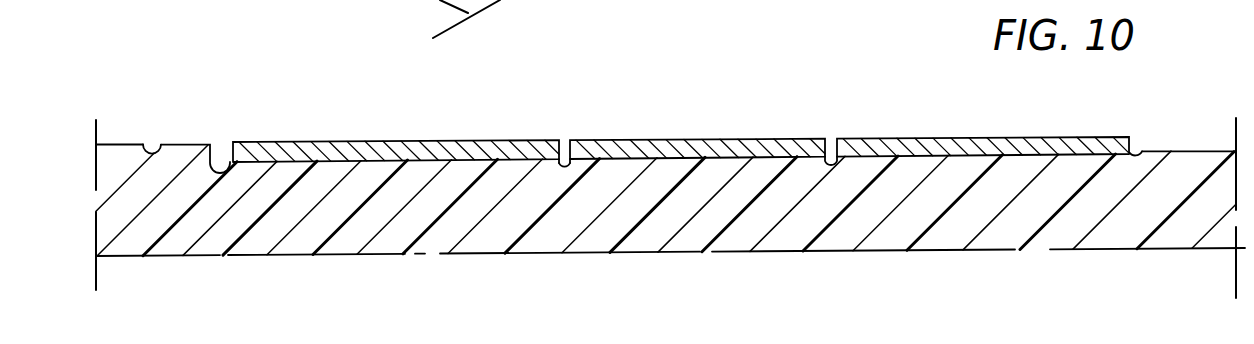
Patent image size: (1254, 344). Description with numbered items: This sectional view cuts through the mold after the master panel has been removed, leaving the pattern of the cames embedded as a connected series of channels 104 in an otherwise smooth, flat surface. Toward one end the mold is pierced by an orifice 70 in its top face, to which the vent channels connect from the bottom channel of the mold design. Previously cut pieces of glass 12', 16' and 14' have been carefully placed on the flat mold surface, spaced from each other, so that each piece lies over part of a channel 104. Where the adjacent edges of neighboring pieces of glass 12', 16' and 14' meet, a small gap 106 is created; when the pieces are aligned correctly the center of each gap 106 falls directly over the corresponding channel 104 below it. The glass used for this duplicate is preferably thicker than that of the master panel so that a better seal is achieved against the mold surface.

The orifice 70 is at (151, 147).
The glass piece 12' is at (396, 126).
The gap 106 is at (564, 140).
The channel 104 is at (567, 170).
The glass piece 16' is at (697, 122).
The glass piece 14' is at (989, 125).